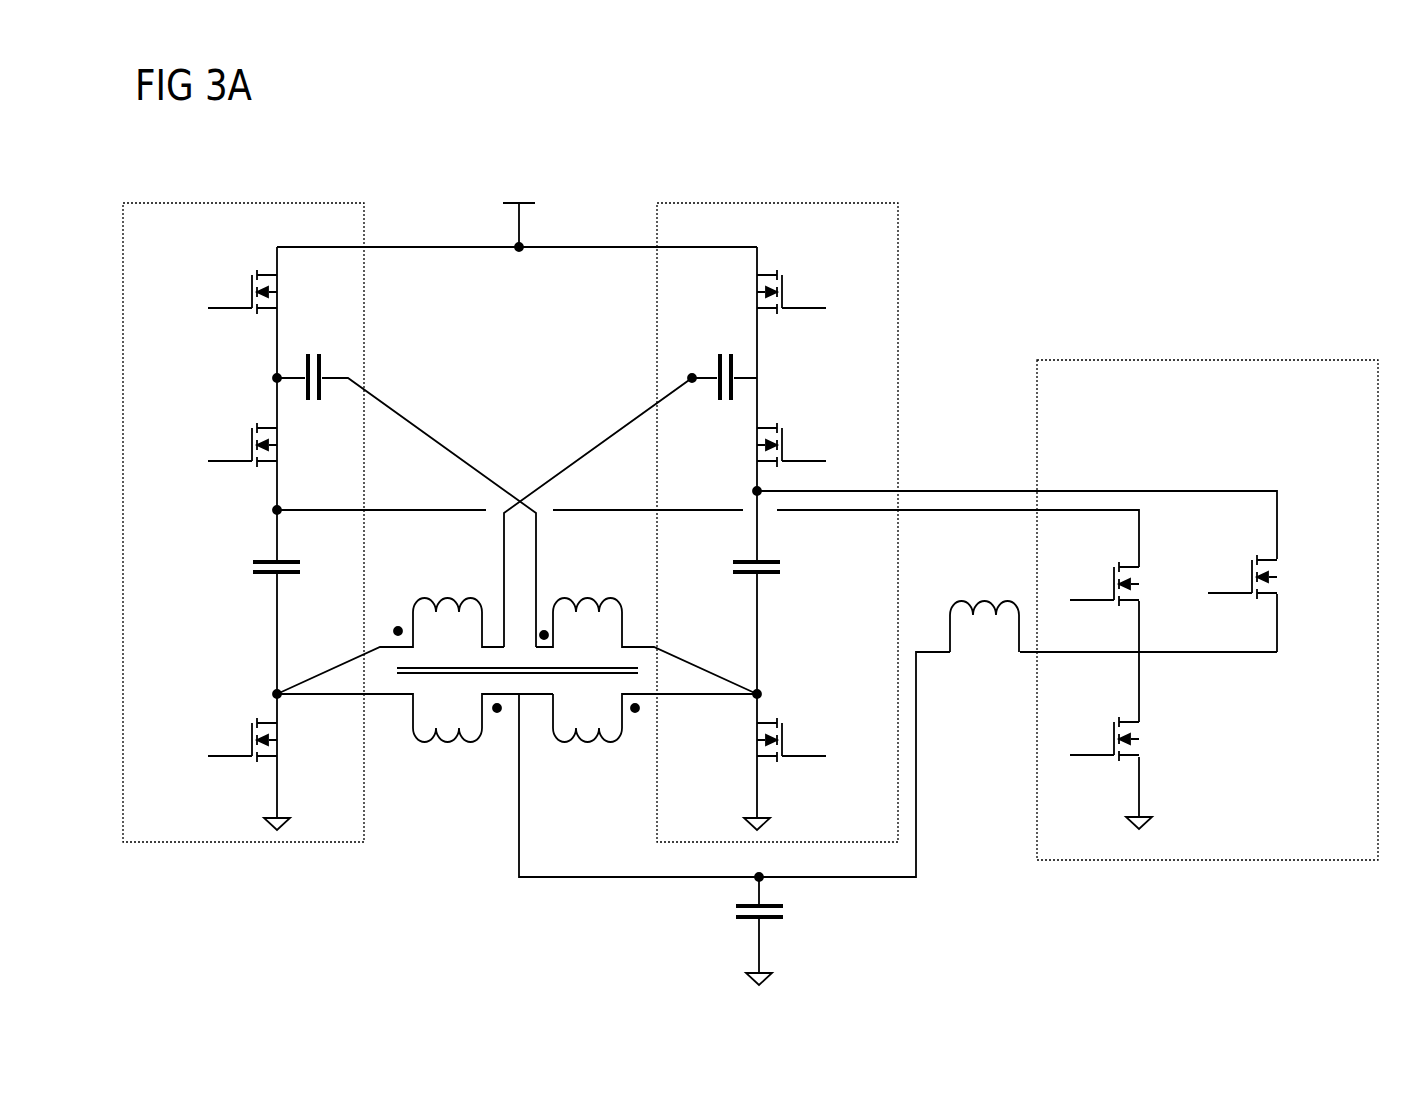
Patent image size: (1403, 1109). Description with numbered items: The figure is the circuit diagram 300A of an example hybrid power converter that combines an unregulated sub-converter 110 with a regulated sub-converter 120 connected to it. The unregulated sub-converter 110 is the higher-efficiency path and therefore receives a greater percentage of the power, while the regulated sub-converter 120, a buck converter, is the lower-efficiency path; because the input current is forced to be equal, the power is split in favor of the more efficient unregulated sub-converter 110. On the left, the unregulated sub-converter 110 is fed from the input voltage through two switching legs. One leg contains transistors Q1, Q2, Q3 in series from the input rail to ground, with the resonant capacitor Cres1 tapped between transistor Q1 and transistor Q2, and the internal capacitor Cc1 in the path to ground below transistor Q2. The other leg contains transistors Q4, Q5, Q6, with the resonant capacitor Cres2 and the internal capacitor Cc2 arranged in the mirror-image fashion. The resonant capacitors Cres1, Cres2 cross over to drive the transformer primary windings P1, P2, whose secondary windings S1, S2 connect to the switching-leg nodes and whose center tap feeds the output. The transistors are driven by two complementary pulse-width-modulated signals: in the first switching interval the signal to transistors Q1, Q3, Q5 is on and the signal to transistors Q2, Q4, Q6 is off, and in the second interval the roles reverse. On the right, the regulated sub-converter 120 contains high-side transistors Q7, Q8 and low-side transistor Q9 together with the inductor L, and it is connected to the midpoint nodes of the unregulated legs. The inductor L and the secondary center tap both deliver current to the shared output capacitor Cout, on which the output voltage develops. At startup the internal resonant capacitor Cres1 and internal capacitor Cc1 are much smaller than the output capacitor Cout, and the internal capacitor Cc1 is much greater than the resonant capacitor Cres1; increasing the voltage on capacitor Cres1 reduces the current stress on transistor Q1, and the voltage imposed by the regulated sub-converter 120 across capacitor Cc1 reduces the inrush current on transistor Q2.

The circuit diagram 300A is at (1274, 91).
The unregulated sub-converter 110 is at (247, 198).
The regulated sub-converter 120 is at (1224, 391).
The transistor Q1 is at (220, 279).
The transistor Q2 is at (228, 433).
The transistor Q3 is at (228, 728).
The transistor Q4 is at (805, 279).
The transistor Q5 is at (805, 433).
The transistor Q6 is at (805, 728).
The transistor Q7 is at (1089, 574).
The transistor Q8 is at (1285, 566).
The transistor Q9 is at (1140, 727).
The resonant capacitor Cres1 is at (406, 487).
The resonant capacitor Cres2 is at (630, 487).
The internal capacitor Cc1 is at (299, 569).
The internal capacitor Cc2 is at (776, 569).
The primary winding P1 is at (390, 630).
The primary winding P2 is at (646, 630).
The secondary winding S1 is at (415, 736).
The secondary winding S2 is at (655, 736).
The inductor L is at (984, 610).
The output capacitor Cout is at (787, 929).